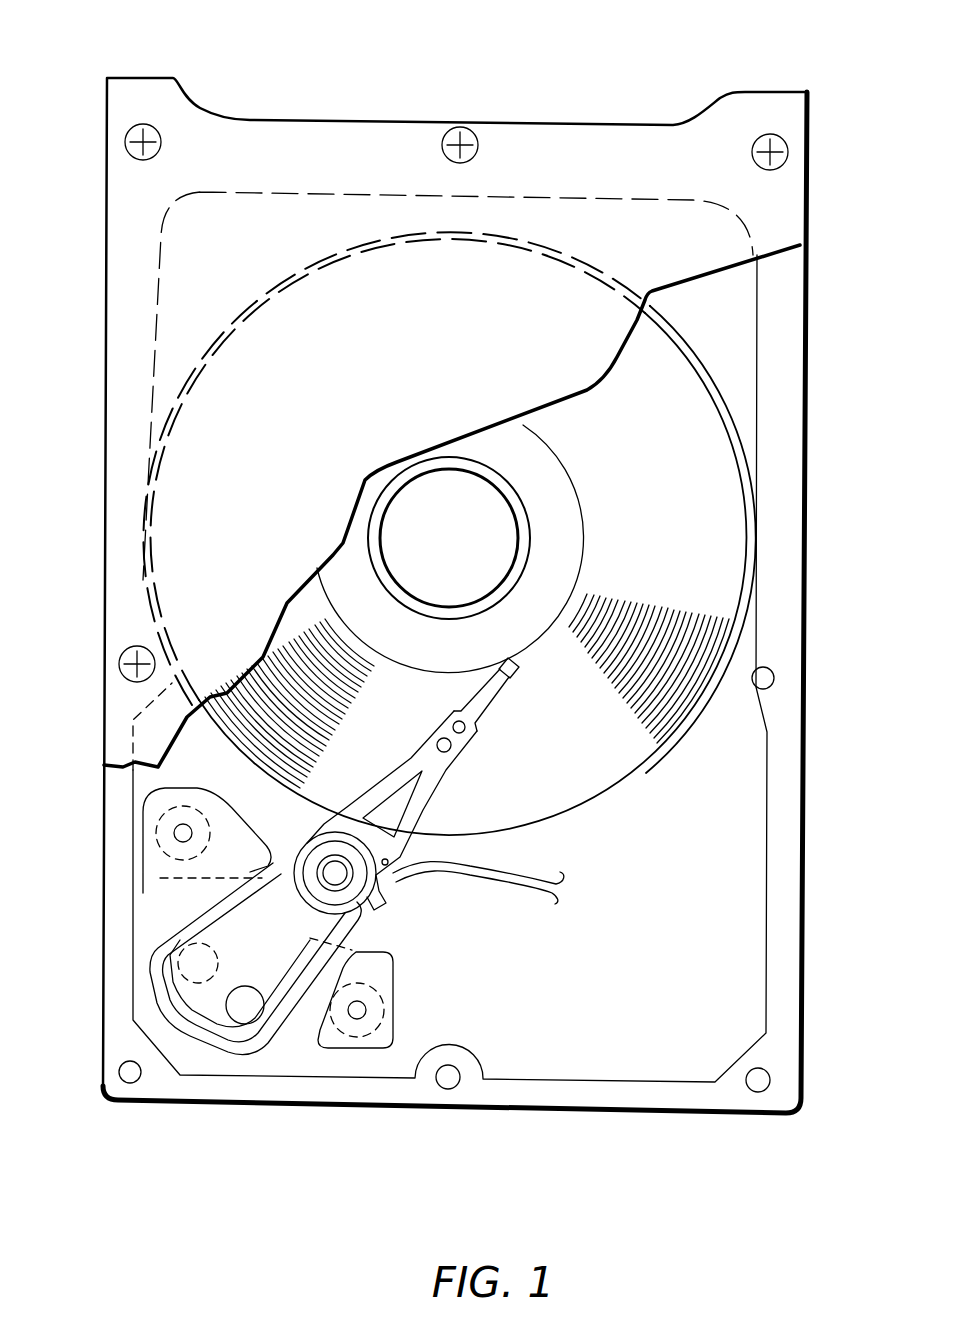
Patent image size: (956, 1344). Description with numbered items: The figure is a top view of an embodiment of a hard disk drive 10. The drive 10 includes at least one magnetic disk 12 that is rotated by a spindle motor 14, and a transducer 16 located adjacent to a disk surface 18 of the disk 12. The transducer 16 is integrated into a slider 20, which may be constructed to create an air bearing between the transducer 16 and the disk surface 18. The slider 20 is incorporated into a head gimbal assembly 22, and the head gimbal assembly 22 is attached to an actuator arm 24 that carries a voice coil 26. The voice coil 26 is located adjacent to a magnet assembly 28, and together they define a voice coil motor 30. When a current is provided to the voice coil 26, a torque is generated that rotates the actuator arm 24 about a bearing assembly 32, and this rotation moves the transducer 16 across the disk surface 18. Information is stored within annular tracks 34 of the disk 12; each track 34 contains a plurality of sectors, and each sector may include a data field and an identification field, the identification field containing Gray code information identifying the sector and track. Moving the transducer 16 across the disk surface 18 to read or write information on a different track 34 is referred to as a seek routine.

The hard disk drive 10 is at (733, 85).
The magnetic disk 12 is at (712, 481).
The spindle motor 14 is at (430, 502).
The transducer 16 is at (513, 670).
The disk surface 18 is at (698, 529).
The slider 20 is at (510, 672).
The head gimbal assembly 22 is at (452, 773).
The actuator arm 24 is at (248, 855).
The voice coil 26 is at (172, 960).
The magnet assembly 28 is at (251, 889).
The voice coil motor 30 is at (293, 1038).
The bearing assembly 32 is at (343, 890).
The annular tracks 34 is at (318, 657).